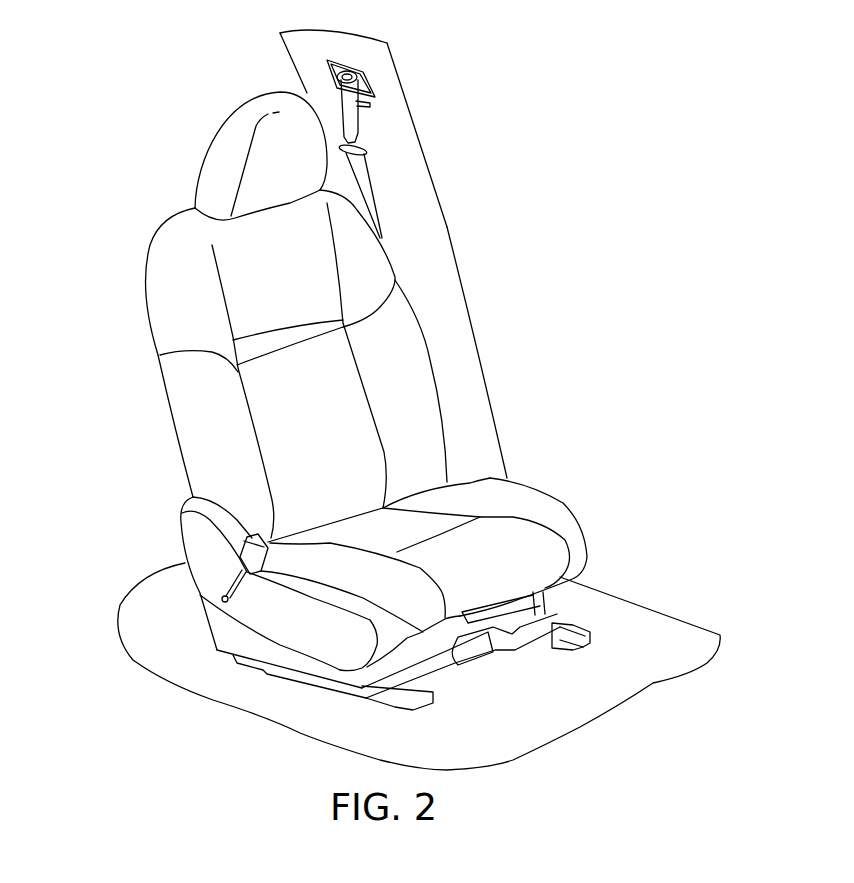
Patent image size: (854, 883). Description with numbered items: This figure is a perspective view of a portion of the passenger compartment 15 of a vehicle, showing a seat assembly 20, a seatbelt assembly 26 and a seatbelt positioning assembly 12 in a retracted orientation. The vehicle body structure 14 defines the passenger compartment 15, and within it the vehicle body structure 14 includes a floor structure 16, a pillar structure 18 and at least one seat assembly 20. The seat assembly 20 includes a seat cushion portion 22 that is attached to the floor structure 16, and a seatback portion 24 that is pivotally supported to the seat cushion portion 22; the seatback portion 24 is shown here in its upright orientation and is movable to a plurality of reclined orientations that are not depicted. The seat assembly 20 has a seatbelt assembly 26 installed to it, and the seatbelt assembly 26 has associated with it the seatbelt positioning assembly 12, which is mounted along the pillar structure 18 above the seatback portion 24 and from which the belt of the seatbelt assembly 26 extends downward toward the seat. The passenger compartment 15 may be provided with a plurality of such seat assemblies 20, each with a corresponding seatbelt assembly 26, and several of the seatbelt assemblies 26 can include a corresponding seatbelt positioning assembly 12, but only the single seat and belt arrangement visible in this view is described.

The seatbelt positioning assembly 12 is at (378, 77).
The vehicle body structure 14 is at (309, 38).
The passenger compartment 15 is at (108, 312).
The floor structure 16 is at (660, 640).
The pillar structure 18 is at (437, 293).
The seat assembly 20 is at (168, 424).
The seat cushion portion 22 is at (563, 513).
The seatback portion 24 is at (410, 407).
The seatbelt assembly 26 is at (373, 191).